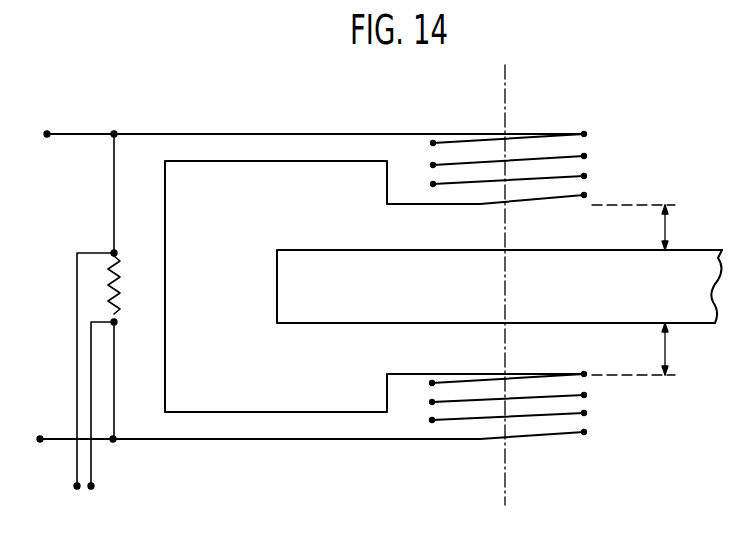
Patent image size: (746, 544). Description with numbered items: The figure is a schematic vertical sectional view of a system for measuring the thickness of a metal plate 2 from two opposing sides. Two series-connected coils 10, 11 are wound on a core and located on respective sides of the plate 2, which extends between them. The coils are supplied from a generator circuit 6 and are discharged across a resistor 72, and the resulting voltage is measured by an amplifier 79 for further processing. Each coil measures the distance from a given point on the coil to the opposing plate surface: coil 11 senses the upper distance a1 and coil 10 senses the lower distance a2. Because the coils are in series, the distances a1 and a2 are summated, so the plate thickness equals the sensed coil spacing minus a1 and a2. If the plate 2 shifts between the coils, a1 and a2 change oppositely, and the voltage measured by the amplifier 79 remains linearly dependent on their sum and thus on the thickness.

The plate 2 is at (300, 250).
The generator circuit 6 is at (46, 133).
The coil 10 is at (553, 421).
The coil 11 is at (543, 142).
The resistor 72 is at (106, 291).
The amplifier 79 is at (90, 489).
The distance a1 is at (644, 227).
The distance a2 is at (644, 349).